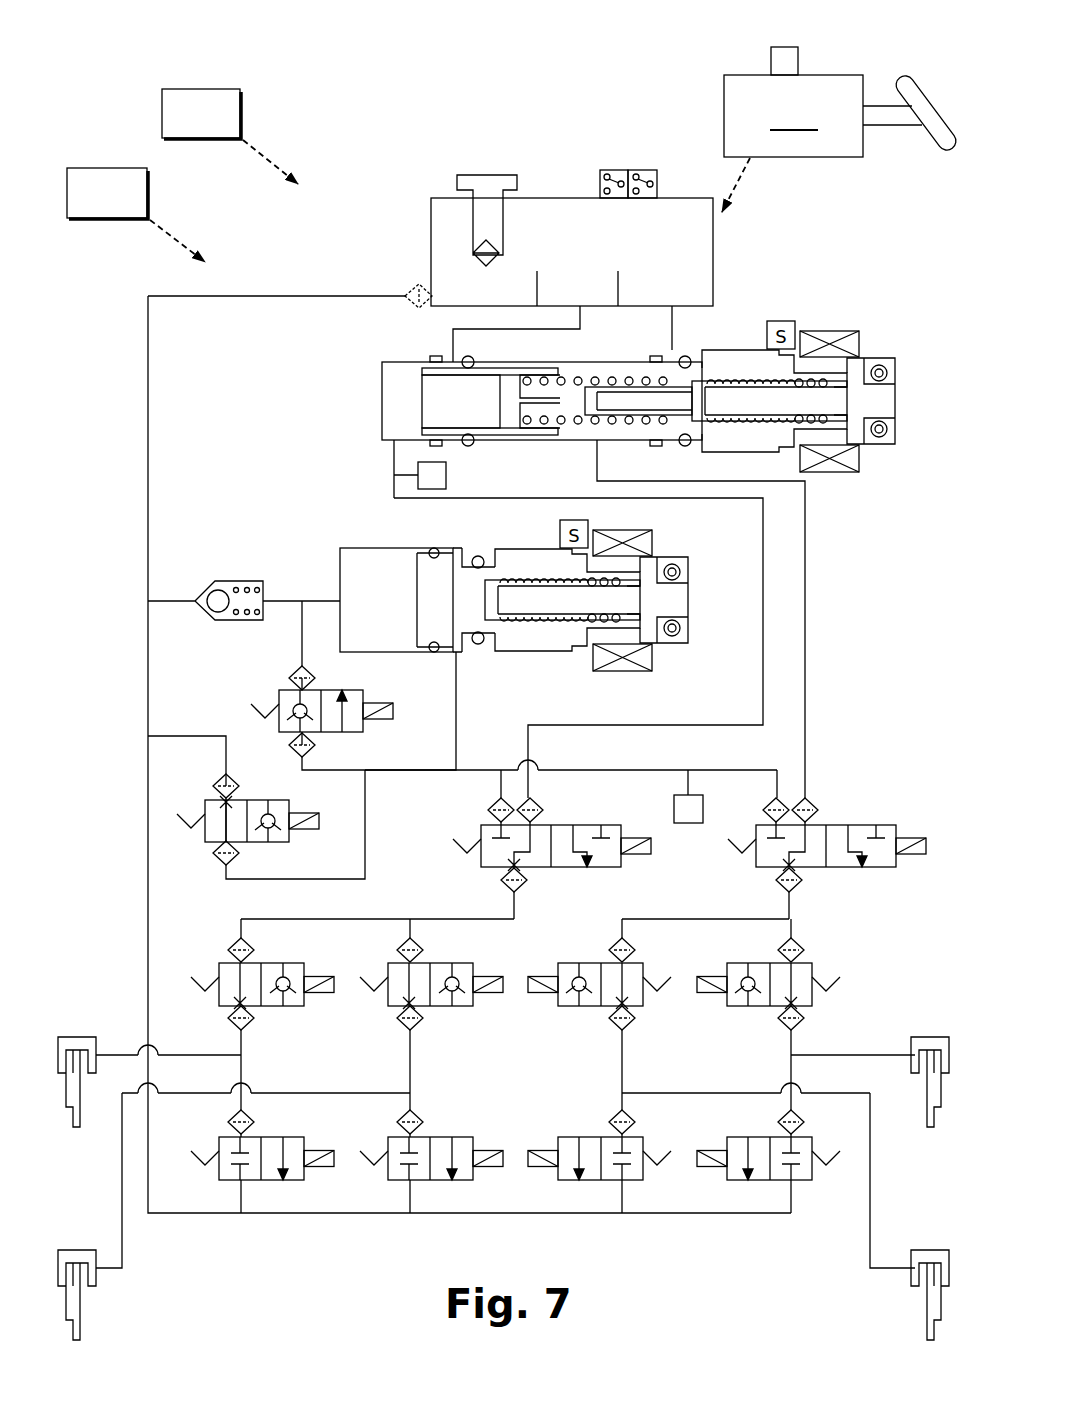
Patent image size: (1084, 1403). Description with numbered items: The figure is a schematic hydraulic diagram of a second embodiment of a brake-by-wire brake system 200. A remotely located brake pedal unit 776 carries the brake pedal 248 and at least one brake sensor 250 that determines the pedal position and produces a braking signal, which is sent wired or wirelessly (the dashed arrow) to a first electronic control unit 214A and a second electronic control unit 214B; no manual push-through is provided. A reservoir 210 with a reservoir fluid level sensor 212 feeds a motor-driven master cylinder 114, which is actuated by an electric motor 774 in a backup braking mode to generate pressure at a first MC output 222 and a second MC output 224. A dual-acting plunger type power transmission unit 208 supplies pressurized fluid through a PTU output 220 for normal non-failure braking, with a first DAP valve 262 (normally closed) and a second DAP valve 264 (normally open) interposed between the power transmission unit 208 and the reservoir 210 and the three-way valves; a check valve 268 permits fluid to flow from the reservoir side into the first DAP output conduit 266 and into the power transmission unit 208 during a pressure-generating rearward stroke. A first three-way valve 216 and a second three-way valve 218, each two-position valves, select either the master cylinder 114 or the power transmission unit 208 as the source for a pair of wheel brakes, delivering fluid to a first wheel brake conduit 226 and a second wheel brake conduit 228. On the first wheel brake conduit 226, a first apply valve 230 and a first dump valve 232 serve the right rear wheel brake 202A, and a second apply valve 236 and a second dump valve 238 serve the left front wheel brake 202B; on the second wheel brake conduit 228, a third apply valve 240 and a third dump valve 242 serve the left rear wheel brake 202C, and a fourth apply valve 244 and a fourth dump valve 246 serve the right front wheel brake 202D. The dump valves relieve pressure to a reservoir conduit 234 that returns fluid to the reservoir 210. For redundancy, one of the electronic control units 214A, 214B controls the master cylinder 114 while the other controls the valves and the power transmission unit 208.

The brake system 200 is at (160, 56).
The right rear wheel brake 202A is at (97, 1048).
The left front wheel brake 202B is at (97, 1260).
The left rear wheel brake 202C is at (914, 1050).
The right front wheel brake 202D is at (914, 1260).
The power transmission unit 208 is at (498, 543).
The reservoir 210 is at (408, 243).
The reservoir fluid level sensor 212 is at (660, 166).
The first electronic control unit 214A is at (242, 95).
The second electronic control unit 214B is at (148, 170).
The first three-way valve 216 is at (596, 870).
The second three-way valve 218 is at (876, 870).
The PTU output 220 is at (566, 773).
The first MC output 222 is at (763, 613).
The second MC output 224 is at (805, 702).
The first wheel brake conduit 226 is at (460, 918).
The second wheel brake conduit 228 is at (750, 918).
The first apply valve 230 is at (275, 962).
The first dump valve 232 is at (276, 1136).
The reservoir conduit 234 is at (146, 806).
The second apply valve 236 is at (442, 962).
The second dump valve 238 is at (440, 1136).
The third apply valve 240 is at (806, 962).
The third dump valve 242 is at (800, 1181).
The fourth apply valve 244 is at (591, 963).
The fourth dump valve 246 is at (590, 1136).
The brake pedal 248 is at (938, 90).
The brake sensor 250 is at (793, 45).
The first DAP valve 262 is at (336, 695).
The second DAP valve 264 is at (282, 800).
The first DAP output conduit 266 is at (315, 600).
The check valve 268 is at (228, 580).
The master cylinder 114 is at (365, 378).
The electric motor 774 is at (872, 332).
The brake pedal unit 776 is at (792, 143).